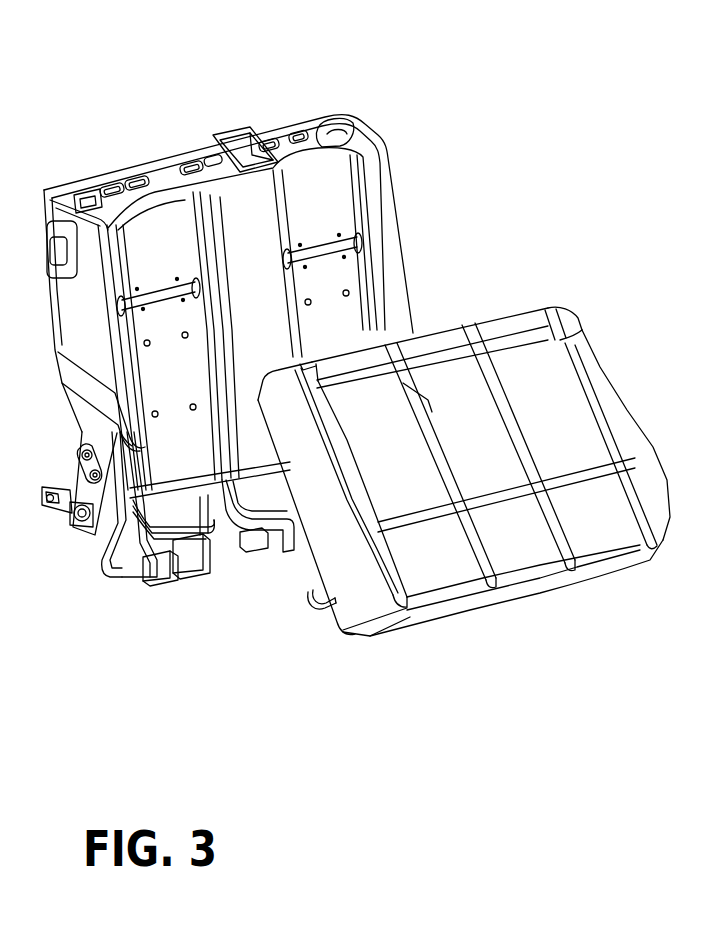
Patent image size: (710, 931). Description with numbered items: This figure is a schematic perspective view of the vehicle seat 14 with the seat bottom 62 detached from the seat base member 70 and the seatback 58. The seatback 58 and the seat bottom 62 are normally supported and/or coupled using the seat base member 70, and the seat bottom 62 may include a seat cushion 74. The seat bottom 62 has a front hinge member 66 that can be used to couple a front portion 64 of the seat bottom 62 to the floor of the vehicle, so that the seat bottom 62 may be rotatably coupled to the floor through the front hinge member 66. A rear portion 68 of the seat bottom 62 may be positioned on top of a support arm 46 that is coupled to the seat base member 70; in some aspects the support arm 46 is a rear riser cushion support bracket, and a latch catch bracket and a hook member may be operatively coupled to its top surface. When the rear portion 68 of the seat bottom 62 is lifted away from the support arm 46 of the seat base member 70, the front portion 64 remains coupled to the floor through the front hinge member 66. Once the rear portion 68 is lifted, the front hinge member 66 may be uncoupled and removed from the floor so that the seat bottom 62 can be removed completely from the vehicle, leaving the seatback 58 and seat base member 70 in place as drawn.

The vehicle seat 14 is at (361, 371).
The seatback 58 is at (322, 190).
The seat base member 70 is at (73, 527).
The support arm 46 is at (140, 555).
The seat bottom 62 is at (469, 459).
The rear portion 68 is at (568, 306).
The seat cushion 74 is at (508, 592).
The front portion 64 is at (665, 540).
The front hinge member 66 is at (323, 605).